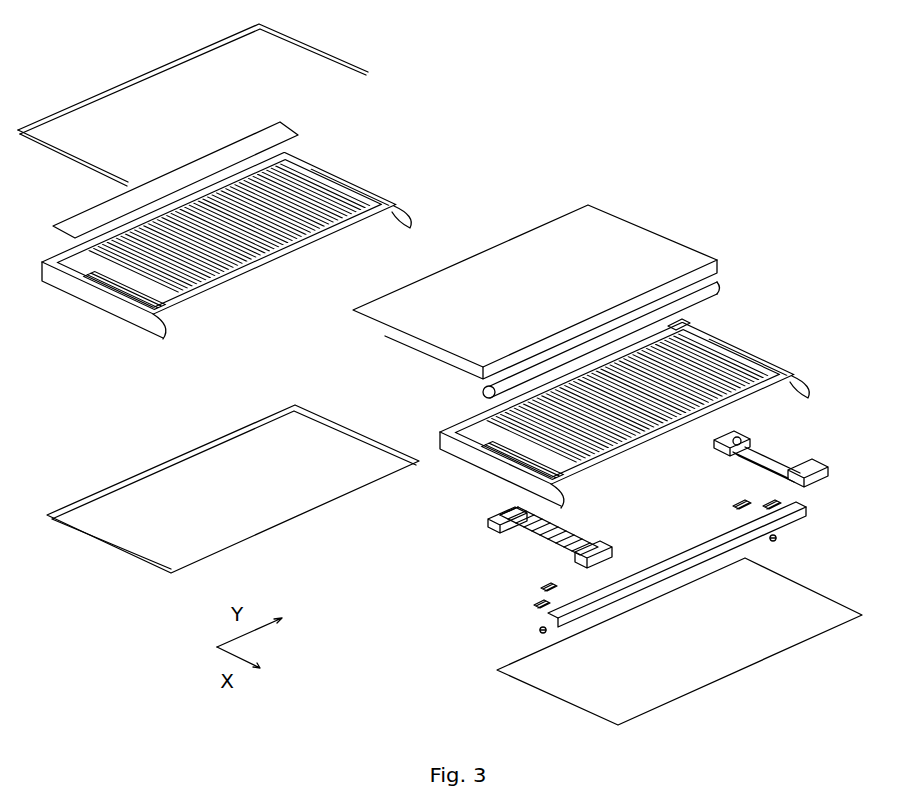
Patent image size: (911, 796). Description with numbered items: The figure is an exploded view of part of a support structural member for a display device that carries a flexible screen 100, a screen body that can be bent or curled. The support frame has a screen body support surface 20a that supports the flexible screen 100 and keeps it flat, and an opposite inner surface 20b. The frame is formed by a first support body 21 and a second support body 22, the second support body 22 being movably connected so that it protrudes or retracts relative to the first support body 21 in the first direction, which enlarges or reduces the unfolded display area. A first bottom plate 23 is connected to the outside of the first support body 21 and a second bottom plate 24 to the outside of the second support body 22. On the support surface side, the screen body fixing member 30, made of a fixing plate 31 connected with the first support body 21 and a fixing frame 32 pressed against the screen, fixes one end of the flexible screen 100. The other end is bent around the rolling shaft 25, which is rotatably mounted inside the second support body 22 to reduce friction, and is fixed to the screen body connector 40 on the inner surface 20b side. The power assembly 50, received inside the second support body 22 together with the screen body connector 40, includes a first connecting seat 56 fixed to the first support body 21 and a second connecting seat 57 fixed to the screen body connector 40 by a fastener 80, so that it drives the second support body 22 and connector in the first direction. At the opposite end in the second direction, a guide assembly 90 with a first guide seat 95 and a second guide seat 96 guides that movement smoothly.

The screen body support surface 20a is at (355, 197).
The inner surface 20b is at (382, 220).
The first support body 21 is at (80, 291).
The second support body 22 is at (797, 391).
The first bottom plate 23 is at (138, 540).
The second bottom plate 24 is at (553, 663).
The rolling shaft 25 is at (717, 288).
The screen body fixing member 30 is at (193, 131).
The fixing plate 31 is at (175, 175).
The fixing frame 32 is at (160, 72).
The screen body connector 40 is at (803, 508).
The power assembly 50 is at (533, 548).
The first connecting seat 56 is at (596, 547).
The second connecting seat 57 is at (500, 534).
The fastener 80 is at (539, 628).
The guide assembly 90 is at (802, 452).
The first guide seat 95 is at (790, 478).
The second guide seat 96 is at (745, 440).
The flexible screen 100 is at (610, 250).